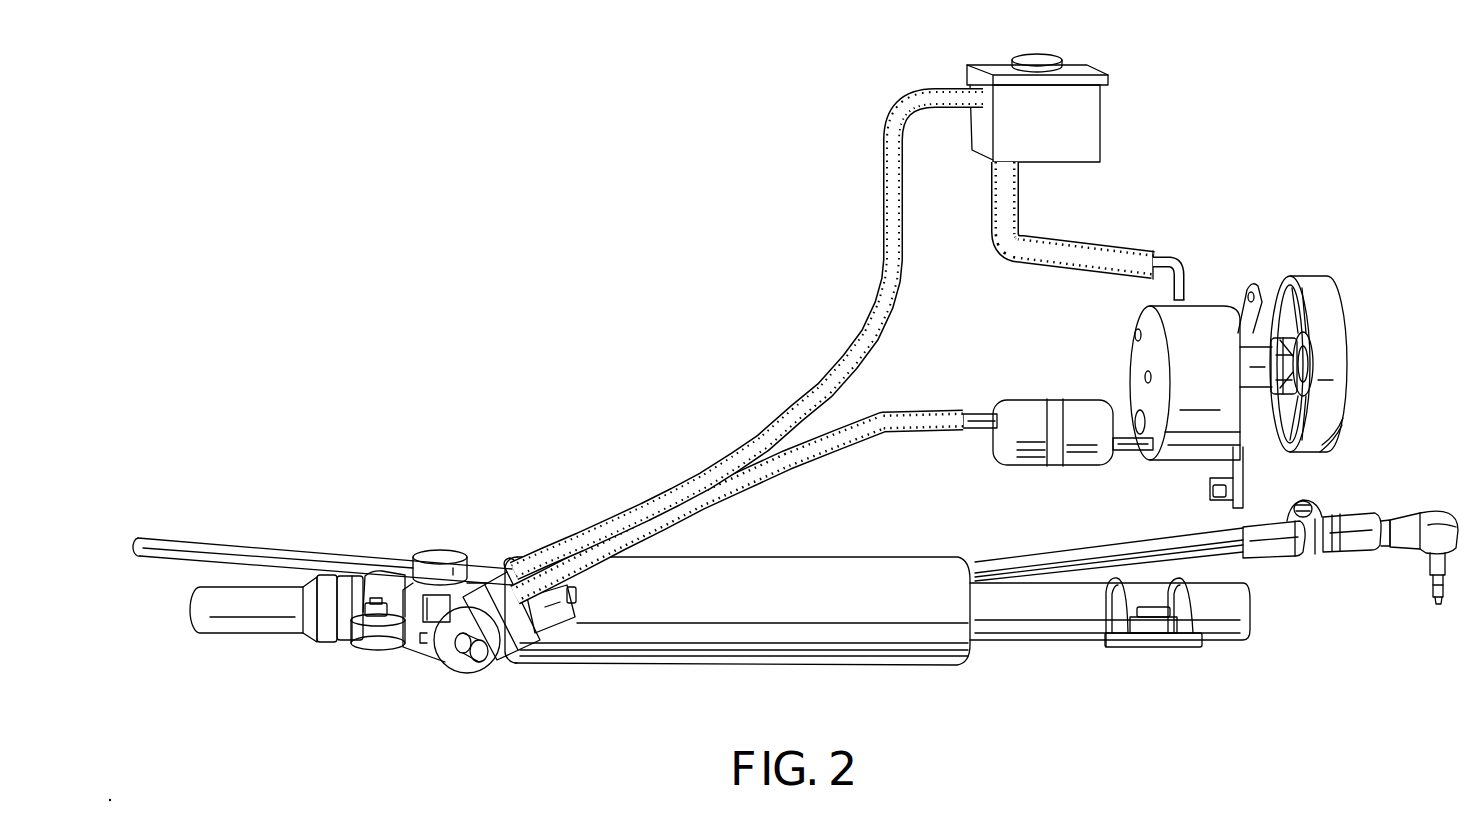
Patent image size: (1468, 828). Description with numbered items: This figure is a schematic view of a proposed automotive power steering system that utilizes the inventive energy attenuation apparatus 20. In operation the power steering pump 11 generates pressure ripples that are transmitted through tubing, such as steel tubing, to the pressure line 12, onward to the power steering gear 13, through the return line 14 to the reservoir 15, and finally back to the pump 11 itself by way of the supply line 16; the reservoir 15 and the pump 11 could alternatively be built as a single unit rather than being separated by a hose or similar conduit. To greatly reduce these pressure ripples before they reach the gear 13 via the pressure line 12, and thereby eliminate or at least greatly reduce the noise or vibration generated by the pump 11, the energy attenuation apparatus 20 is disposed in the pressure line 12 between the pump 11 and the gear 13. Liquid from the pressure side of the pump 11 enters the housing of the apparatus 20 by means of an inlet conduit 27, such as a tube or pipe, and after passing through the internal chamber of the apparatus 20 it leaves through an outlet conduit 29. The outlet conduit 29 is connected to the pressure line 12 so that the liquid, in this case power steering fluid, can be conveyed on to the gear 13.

The power steering pump 11 is at (1200, 320).
The pressure line 12 is at (840, 450).
The power steering gear 13 is at (440, 553).
The return line 14 is at (867, 303).
The reservoir 15 is at (1093, 123).
The supply line 16 is at (1093, 240).
The energy attenuation apparatus 20 is at (1067, 400).
The inlet conduit 27 is at (1130, 450).
The outlet conduit 29 is at (980, 413).